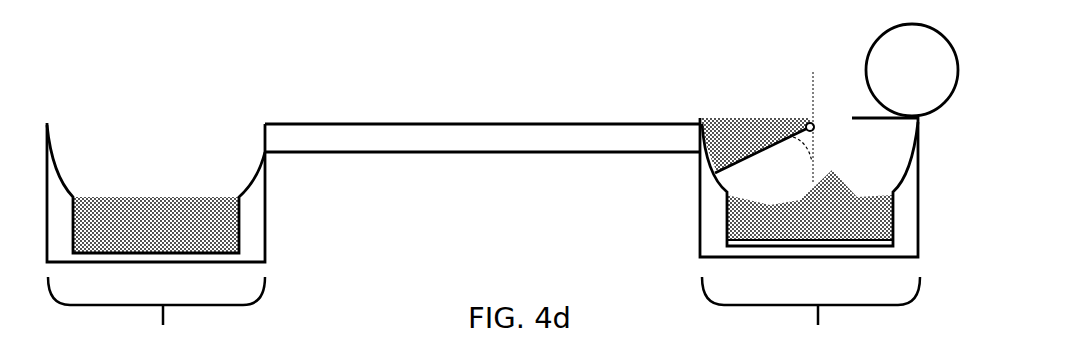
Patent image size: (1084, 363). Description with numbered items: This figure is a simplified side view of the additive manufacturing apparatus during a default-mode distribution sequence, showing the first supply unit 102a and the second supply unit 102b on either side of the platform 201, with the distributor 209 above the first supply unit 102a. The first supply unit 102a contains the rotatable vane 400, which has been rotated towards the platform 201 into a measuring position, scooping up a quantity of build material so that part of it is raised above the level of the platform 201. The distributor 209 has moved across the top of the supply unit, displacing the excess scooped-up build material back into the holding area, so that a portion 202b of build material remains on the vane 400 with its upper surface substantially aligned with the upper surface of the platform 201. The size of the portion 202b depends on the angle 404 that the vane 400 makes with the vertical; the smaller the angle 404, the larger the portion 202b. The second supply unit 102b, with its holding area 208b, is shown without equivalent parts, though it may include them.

The holding area 208b is at (203, 128).
The second supply unit 102b is at (156, 316).
The platform 201 is at (323, 152).
The portion of build material 202b is at (738, 120).
The distributor 209 is at (873, 52).
The rotatable vane 400 is at (757, 153).
The angle 404 is at (803, 143).
The first supply unit 102a is at (811, 316).